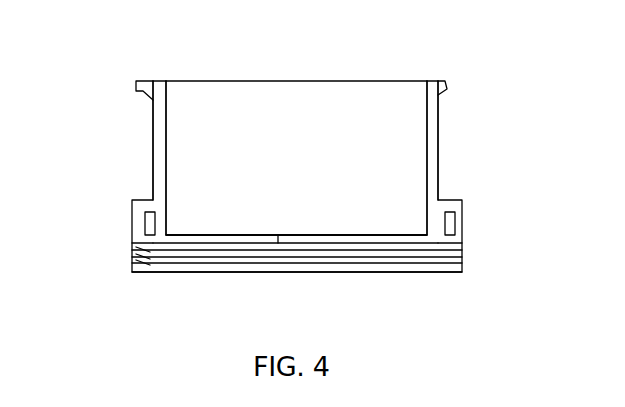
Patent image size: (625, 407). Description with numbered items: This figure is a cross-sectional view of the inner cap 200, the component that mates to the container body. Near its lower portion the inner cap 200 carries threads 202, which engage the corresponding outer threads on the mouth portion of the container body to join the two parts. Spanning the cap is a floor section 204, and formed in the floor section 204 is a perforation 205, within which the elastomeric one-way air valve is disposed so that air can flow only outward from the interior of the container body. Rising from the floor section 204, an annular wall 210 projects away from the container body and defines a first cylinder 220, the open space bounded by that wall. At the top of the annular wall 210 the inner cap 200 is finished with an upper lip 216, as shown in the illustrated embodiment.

The inner cap 200 is at (312, 176).
The threads 202 is at (442, 268).
The floor section 204 is at (398, 235).
The perforation 205 is at (312, 237).
The annular wall 210 is at (432, 130).
The upper lip 216 is at (150, 80).
The first cylinder 220 is at (342, 105).